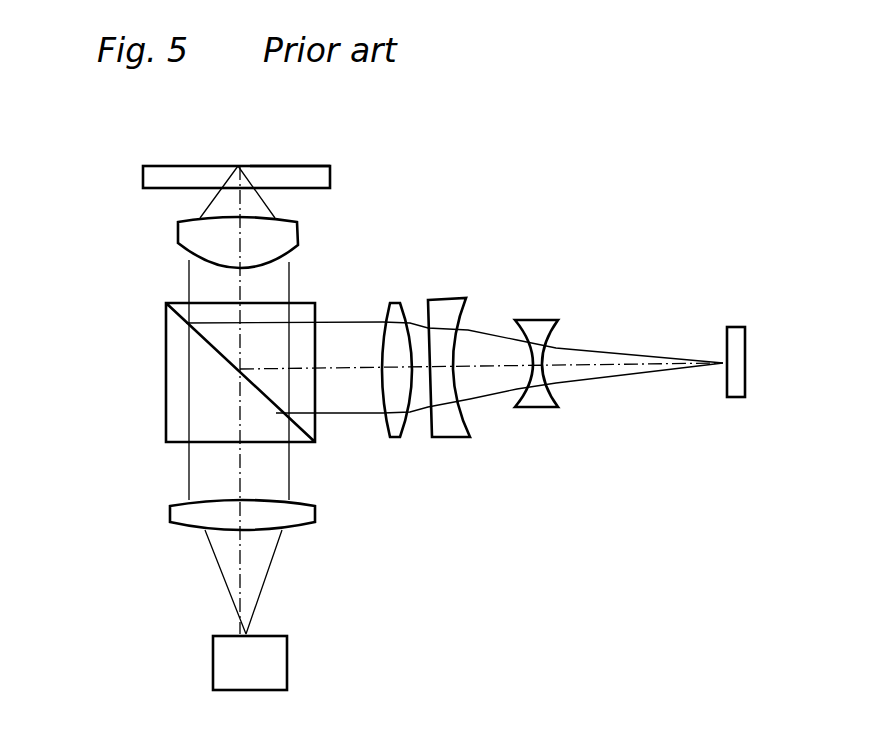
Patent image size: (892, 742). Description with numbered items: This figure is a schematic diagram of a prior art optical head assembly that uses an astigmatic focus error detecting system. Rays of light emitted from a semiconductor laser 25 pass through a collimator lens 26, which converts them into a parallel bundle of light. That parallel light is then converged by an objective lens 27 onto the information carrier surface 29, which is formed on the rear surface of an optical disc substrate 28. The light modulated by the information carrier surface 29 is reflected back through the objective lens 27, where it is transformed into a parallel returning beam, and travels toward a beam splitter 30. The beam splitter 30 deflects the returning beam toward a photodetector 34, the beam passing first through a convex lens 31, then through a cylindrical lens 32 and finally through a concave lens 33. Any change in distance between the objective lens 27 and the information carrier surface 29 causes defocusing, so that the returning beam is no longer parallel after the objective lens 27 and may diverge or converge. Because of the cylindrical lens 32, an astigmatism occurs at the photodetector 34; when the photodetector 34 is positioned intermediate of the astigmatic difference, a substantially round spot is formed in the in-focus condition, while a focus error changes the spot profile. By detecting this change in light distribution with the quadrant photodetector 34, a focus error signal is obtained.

The semiconductor laser 25 is at (222, 666).
The collimator lens 26 is at (186, 517).
The objective lens 27 is at (193, 232).
The optical disc substrate 28 is at (150, 178).
The information carrier surface 29 is at (280, 165).
The beam splitter 30 is at (176, 380).
The convex lens 31 is at (395, 307).
The cylindrical lens 32 is at (448, 303).
The concave lens 33 is at (525, 318).
The photodetector 34 is at (737, 327).